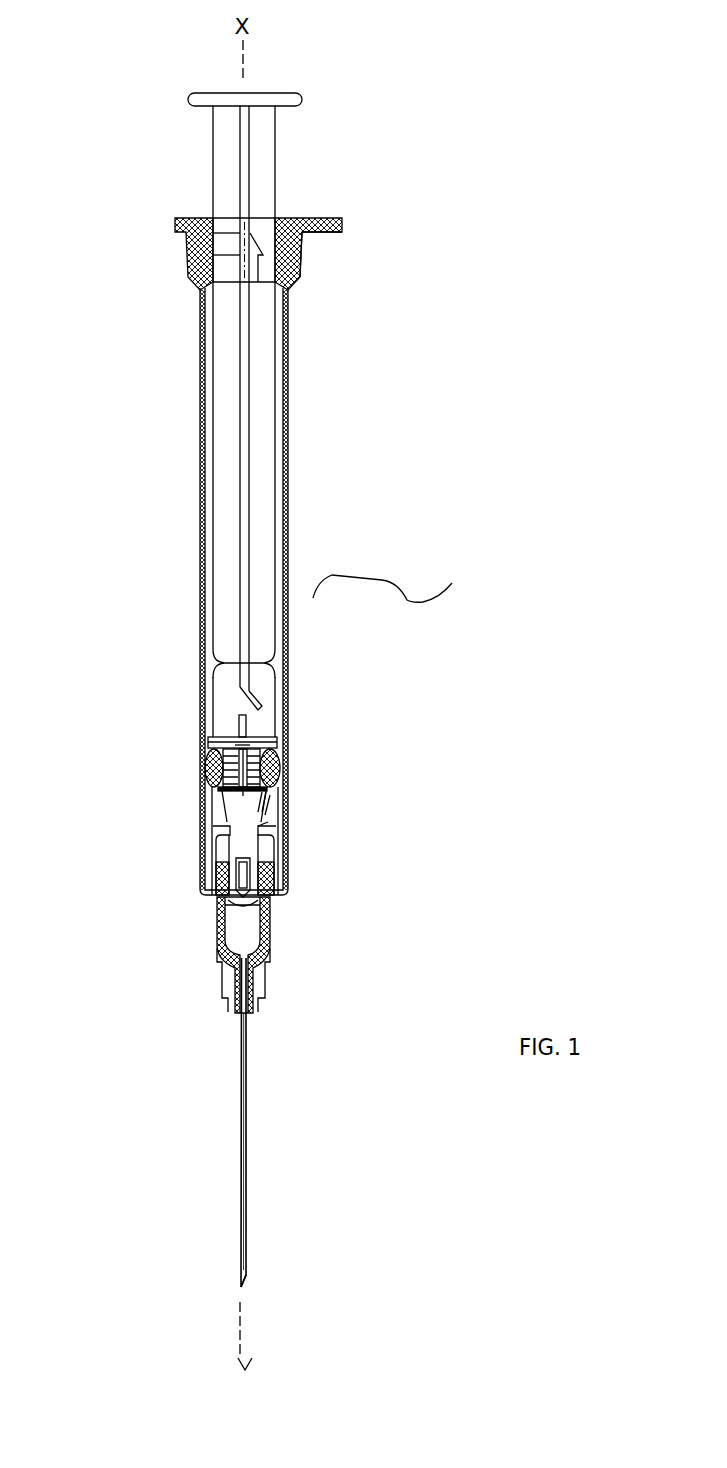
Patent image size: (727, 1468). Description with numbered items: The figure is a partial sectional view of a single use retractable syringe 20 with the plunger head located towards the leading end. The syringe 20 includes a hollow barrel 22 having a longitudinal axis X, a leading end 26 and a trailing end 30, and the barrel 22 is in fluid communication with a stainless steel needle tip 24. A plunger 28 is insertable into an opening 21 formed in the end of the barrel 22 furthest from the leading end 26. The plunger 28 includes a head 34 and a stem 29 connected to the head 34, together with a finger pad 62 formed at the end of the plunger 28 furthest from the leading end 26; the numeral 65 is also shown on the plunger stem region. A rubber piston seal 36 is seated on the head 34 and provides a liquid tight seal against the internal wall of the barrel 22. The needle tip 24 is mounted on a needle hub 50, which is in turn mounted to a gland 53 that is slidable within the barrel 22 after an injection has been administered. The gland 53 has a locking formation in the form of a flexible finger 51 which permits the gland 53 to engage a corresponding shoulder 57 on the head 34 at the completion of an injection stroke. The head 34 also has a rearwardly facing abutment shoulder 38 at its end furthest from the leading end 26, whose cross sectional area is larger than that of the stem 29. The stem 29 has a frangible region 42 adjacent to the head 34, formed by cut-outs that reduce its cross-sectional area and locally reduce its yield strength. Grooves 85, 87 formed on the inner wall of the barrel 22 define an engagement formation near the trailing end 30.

The syringe 20 is at (403, 589).
The opening 21 is at (205, 213).
The hollow barrel 22 is at (289, 422).
The needle tip 24 is at (255, 1173).
The leading end 26 is at (280, 1265).
The plunger 28 is at (260, 633).
The stem 29 is at (265, 518).
The trailing end 30 is at (312, 212).
The head 34 is at (237, 825).
The rubber piston seal 36 is at (283, 768).
The rearwardly facing abutment shoulder 38 is at (277, 735).
The frangible region 42 is at (222, 663).
The needle hub 50 is at (267, 932).
The flexible finger 51 is at (277, 797).
The gland 53 is at (285, 857).
The shoulder 57 is at (263, 820).
The finger pad 62 is at (273, 89).
The plunger rod shaft 65 is at (285, 110).
The groove 85 is at (298, 270).
The groove 87 is at (310, 235).